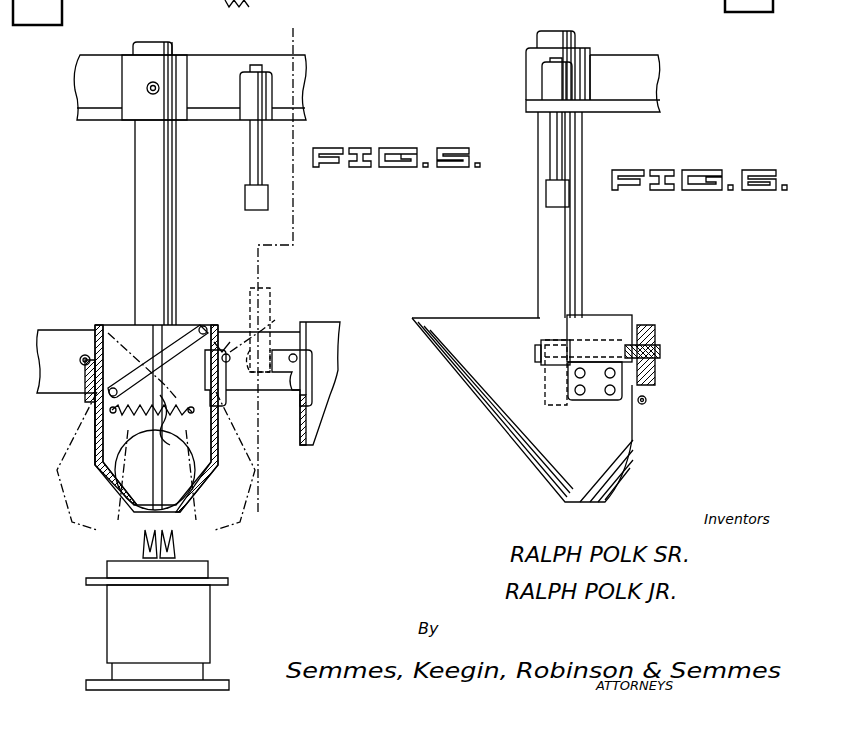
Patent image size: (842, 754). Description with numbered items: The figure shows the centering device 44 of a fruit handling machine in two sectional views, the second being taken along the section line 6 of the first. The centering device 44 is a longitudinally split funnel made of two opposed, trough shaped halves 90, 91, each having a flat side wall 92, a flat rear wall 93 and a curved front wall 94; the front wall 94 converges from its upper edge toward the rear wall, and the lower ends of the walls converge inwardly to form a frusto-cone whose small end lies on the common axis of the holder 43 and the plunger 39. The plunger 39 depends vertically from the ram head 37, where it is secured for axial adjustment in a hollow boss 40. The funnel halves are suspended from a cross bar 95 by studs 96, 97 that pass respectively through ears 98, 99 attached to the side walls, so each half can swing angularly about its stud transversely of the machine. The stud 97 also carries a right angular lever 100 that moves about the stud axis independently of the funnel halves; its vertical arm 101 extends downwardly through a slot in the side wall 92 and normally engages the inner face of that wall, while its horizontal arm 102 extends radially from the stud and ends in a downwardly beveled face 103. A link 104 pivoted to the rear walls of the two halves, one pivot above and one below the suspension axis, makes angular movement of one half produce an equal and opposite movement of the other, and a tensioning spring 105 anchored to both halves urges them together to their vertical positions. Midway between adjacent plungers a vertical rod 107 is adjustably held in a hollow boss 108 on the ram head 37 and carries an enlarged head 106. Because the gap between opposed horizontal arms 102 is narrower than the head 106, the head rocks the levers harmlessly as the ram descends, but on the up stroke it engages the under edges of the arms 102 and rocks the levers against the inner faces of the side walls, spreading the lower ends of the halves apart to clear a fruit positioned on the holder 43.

In FIG. 5, the section line 6— 6 is at (300, 47).
In FIG. 5, the ram head 37 is at (80, 97).
In FIG. 6, the ram head 37 is at (593, 83).
In FIG. 5, the plunger 39 is at (150, 207).
In FIG. 6, the plunger 39 is at (560, 215).
In FIG. 5, the hollow boss 40 is at (135, 78).
In FIG. 6, the hollow boss 40 is at (558, 65).
In FIG. 5, the holder 43 is at (94, 604).
In FIG. 5, the centering device 44 is at (84, 436).
In FIG. 5, the funnel half 90 is at (84, 460).
In FIG. 5, the funnel half 91 is at (232, 466).
In FIG. 5, the side wall 92 is at (94, 408).
In FIG. 5, the rear wall 93 is at (118, 323).
In FIG. 6, the rear wall 93 is at (632, 428).
In FIG. 6, the front wall 94 is at (478, 392).
In FIG. 5, the cross bar 95 is at (282, 330).
In FIG. 6, the cross bar 95 is at (648, 322).
In FIG. 5, the stud 96 is at (90, 332).
In FIG. 5, the stud 97 is at (220, 346).
In FIG. 6, the stud 97 is at (658, 352).
In FIG. 5, the ear 98 is at (80, 375).
In FIG. 5, the ear 99 is at (214, 392).
In FIG. 6, the ear 99 is at (598, 398).
In FIG. 5, the right angular lever 100 is at (213, 312).
In FIG. 5, the vertical arm 101 is at (206, 388).
In FIG. 6, the vertical arm 101 is at (552, 390).
In FIG. 5, the horizontal arm 102 is at (240, 348).
In FIG. 5, the beveled face 103 is at (253, 367).
In FIG. 6, the beveled face 103 is at (550, 345).
In FIG. 5, the link 104 is at (150, 372).
In FIG. 5, the tensioning spring 105 is at (152, 452).
In FIG. 6, the tensioning spring 105 is at (646, 397).
In FIG. 5, the enlarged head 106 is at (255, 200).
In FIG. 6, the enlarged head 106 is at (560, 195).
In FIG. 5, the vertical rod 107 is at (255, 140).
In FIG. 6, the vertical rod 107 is at (565, 152).
In FIG. 5, the hollow boss 108 is at (245, 90).
In FIG. 6, the hollow boss 108 is at (545, 88).